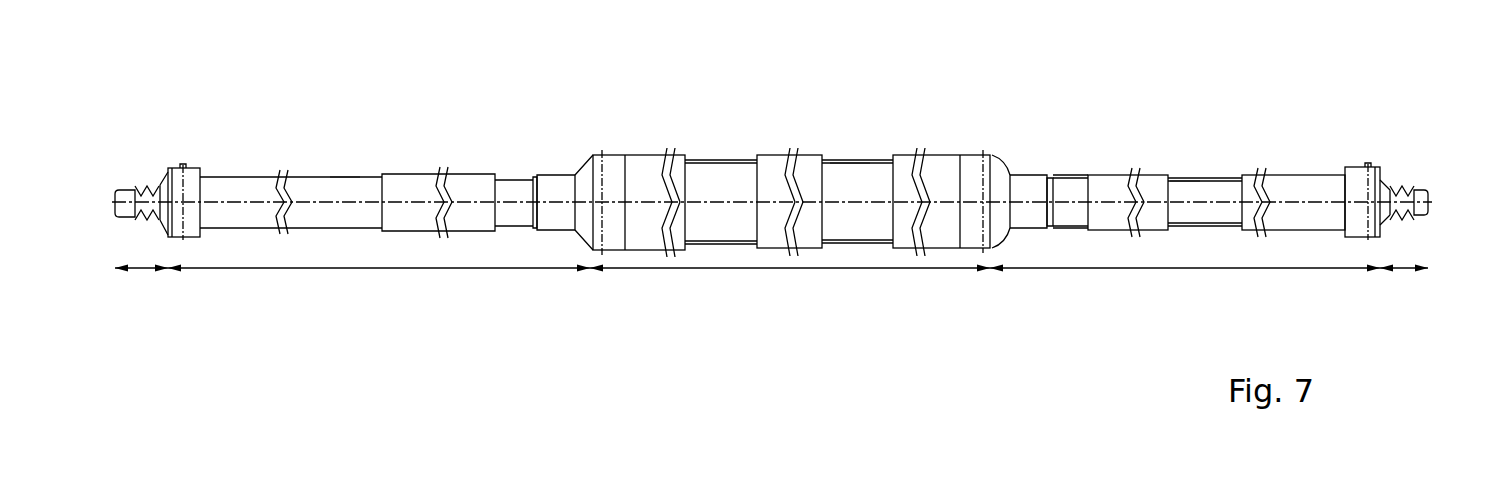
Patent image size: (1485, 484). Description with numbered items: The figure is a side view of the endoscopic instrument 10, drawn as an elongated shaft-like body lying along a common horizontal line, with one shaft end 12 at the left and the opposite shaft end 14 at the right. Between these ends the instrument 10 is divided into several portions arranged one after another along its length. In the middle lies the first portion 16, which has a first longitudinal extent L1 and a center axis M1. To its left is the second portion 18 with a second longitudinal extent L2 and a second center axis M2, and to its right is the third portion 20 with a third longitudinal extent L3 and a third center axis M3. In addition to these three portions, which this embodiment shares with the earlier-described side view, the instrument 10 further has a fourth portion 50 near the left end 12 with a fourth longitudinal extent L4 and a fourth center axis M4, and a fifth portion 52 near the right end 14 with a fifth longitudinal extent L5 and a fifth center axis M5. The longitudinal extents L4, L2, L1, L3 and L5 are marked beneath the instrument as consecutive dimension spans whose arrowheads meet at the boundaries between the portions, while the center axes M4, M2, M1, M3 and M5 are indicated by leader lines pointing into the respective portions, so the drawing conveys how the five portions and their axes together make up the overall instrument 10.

The endoscopic instrument 10 is at (1337, 84).
The first shaft end 12 is at (114, 137).
The second shaft end 14 is at (1445, 188).
The first portion 16 is at (718, 130).
The second portion 18 is at (520, 128).
The third portion 20 is at (1065, 132).
The fourth portion 50 is at (168, 155).
The fifth portion 52 is at (1385, 160).
The center axis M1 is at (844, 198).
The second center axis M2 is at (344, 178).
The third center axis M3 is at (1183, 198).
The fourth center axis M4 is at (133, 180).
The fifth center axis M5 is at (1416, 195).
The first longitudinal extent L1 is at (776, 270).
The second longitudinal extent L2 is at (383, 270).
The third longitudinal extent L3 is at (1220, 270).
The fourth longitudinal extent L4 is at (142, 270).
The fifth longitudinal extent L5 is at (1405, 270).